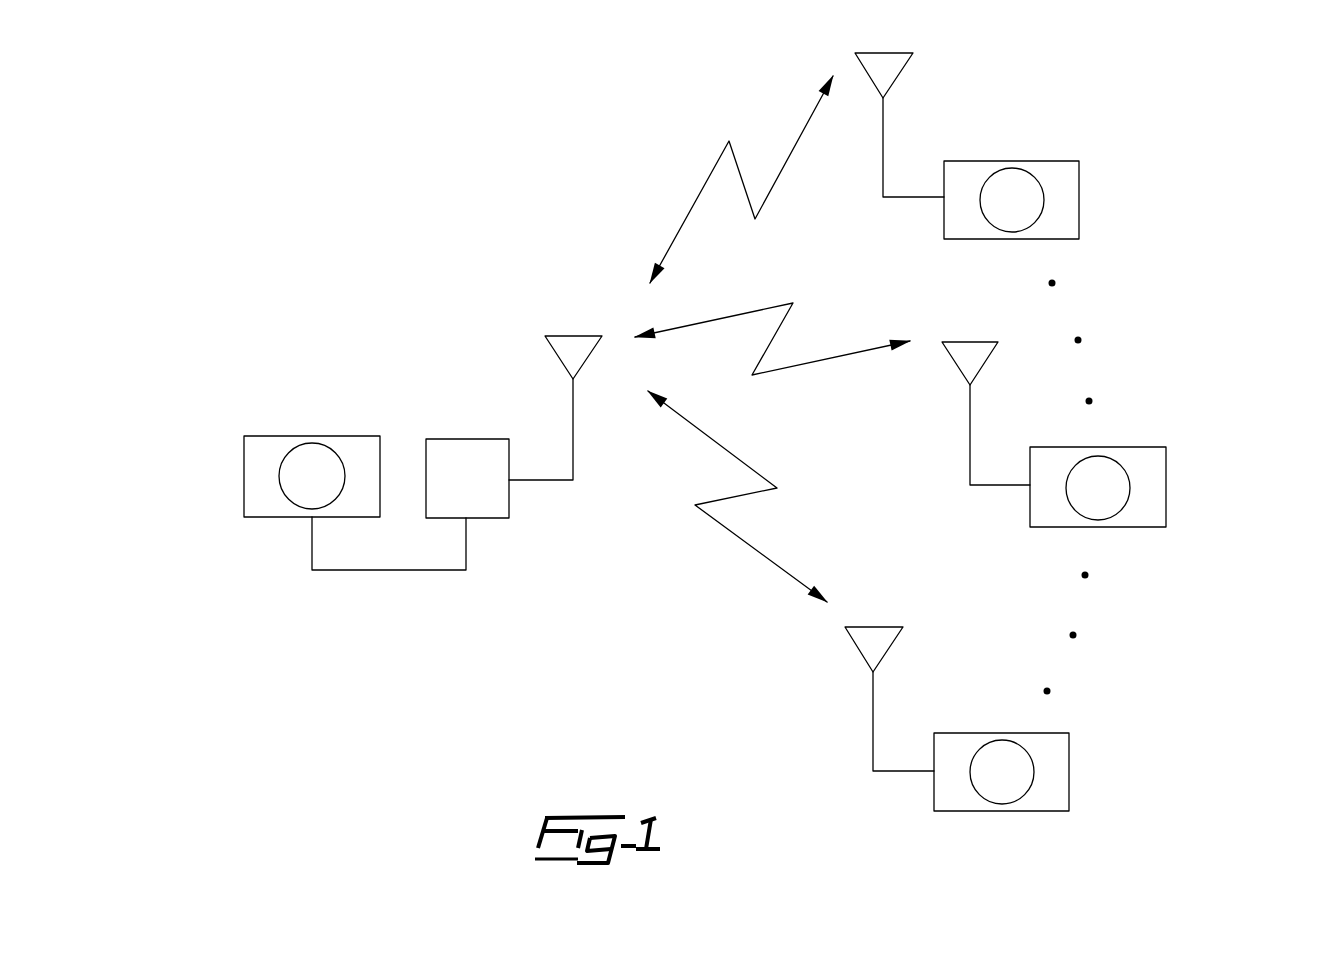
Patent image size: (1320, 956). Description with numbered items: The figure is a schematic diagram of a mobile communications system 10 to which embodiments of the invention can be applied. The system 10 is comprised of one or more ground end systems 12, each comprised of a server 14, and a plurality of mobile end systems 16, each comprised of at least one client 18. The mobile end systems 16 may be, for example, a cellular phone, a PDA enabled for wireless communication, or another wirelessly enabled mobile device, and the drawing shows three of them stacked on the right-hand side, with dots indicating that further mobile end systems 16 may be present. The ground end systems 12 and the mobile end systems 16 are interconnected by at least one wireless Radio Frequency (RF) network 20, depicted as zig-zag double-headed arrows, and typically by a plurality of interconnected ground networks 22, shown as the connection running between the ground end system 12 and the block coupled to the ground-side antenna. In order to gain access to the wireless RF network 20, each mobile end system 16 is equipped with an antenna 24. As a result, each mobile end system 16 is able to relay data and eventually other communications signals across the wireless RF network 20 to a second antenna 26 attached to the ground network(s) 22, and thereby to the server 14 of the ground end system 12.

The mobile communications system 10 is at (410, 332).
The ground end system 12 is at (262, 436).
The server 14 is at (318, 443).
The mobile end system 16 is at (1045, 161).
The client 18 is at (1044, 200).
The wireless Radio Frequency (RF) network 20 is at (693, 202).
The ground network 22 is at (397, 570).
The antenna 24 is at (883, 135).
The second antenna 26 is at (573, 336).